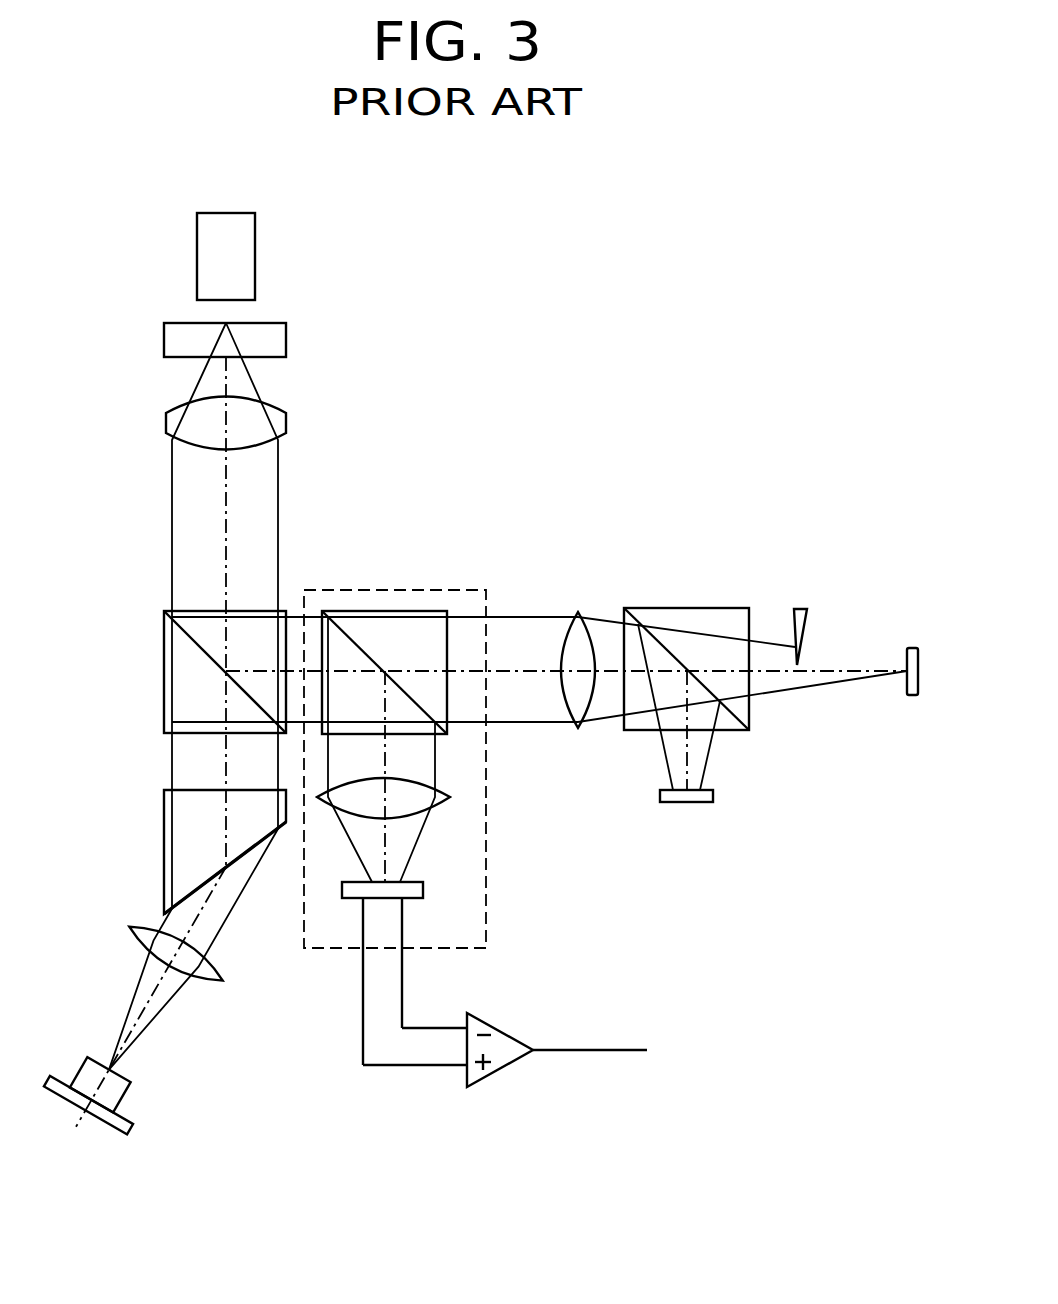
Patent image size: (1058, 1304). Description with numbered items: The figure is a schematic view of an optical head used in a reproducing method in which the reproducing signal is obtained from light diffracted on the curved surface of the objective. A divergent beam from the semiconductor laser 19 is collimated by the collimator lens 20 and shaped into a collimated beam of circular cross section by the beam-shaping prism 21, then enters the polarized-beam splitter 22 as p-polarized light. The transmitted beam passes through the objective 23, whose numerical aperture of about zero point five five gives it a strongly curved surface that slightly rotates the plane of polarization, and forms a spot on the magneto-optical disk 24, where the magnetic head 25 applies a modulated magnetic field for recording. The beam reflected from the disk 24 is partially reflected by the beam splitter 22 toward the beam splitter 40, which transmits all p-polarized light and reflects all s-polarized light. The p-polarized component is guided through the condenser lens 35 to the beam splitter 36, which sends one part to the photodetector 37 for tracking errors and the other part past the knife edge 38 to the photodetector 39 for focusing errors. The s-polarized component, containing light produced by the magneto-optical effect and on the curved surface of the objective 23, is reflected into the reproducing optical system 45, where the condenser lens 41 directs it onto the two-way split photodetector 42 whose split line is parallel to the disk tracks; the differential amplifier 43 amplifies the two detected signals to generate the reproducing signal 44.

The semiconductor laser 19 is at (87, 1057).
The collimator lens 20 is at (136, 925).
The beam-shaping prism 21 is at (164, 798).
The polarized-beam splitter 22 is at (164, 632).
The objective 23 is at (286, 430).
The magneto-optical disk 24 is at (286, 338).
The magnetic head 25 is at (255, 258).
The condenser lens 35 is at (578, 612).
The beam splitter 36 is at (713, 608).
The photodetector 37 is at (713, 796).
The knife edge 38 is at (803, 608).
The photodetector 39 is at (911, 647).
The beam splitter 40 is at (429, 611).
The condenser lens 41 is at (450, 797).
The two-way split photodetector 42 is at (423, 890).
The differential amplifier 43 is at (513, 1035).
The reproducing signal 44 is at (600, 1048).
The reproducing optical system 45 is at (305, 948).